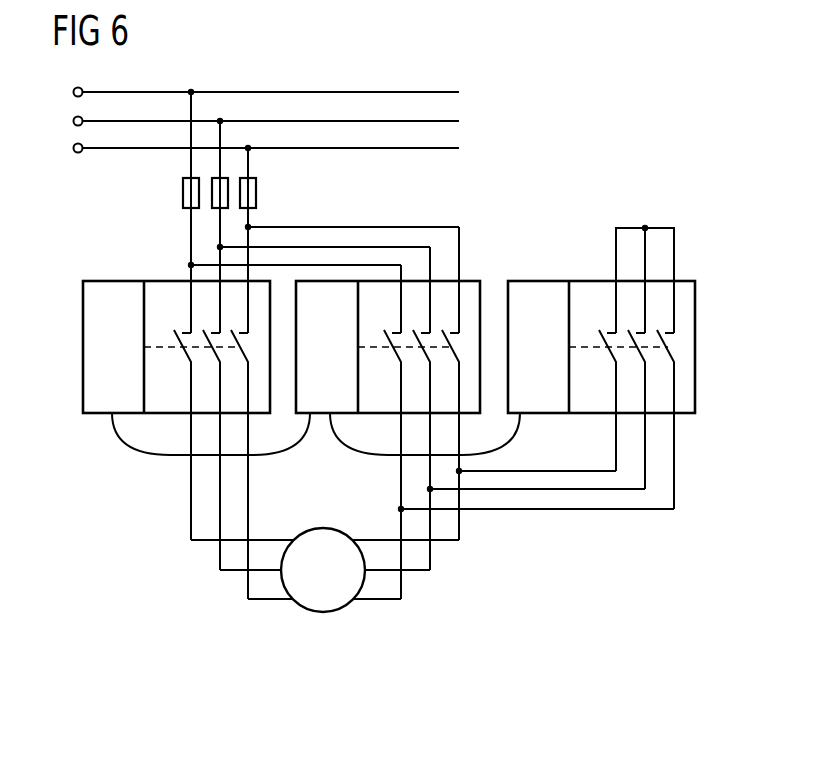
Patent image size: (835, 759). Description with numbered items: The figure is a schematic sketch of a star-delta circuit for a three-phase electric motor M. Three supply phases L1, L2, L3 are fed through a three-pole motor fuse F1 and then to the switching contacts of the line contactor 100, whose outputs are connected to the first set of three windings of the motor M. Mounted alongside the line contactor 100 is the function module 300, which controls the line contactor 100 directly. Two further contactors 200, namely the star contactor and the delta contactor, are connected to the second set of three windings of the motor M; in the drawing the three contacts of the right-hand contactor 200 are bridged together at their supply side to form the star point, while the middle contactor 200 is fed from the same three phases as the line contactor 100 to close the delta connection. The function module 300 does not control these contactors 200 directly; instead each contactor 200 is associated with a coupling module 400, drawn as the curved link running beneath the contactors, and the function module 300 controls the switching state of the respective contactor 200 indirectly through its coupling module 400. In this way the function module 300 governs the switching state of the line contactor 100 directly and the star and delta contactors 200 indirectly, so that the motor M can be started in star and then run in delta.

The line contactor 100 is at (158, 288).
The star contactor 200 is at (470, 290).
The function module 300 is at (103, 288).
The coupling module 400 is at (322, 405).
The three-pole motor fuse F1 is at (175, 190).
The three-phase electric motor M is at (325, 538).
The supply phase L1 is at (254, 93).
The supply phase L2 is at (254, 121).
The supply phase L3 is at (254, 148).